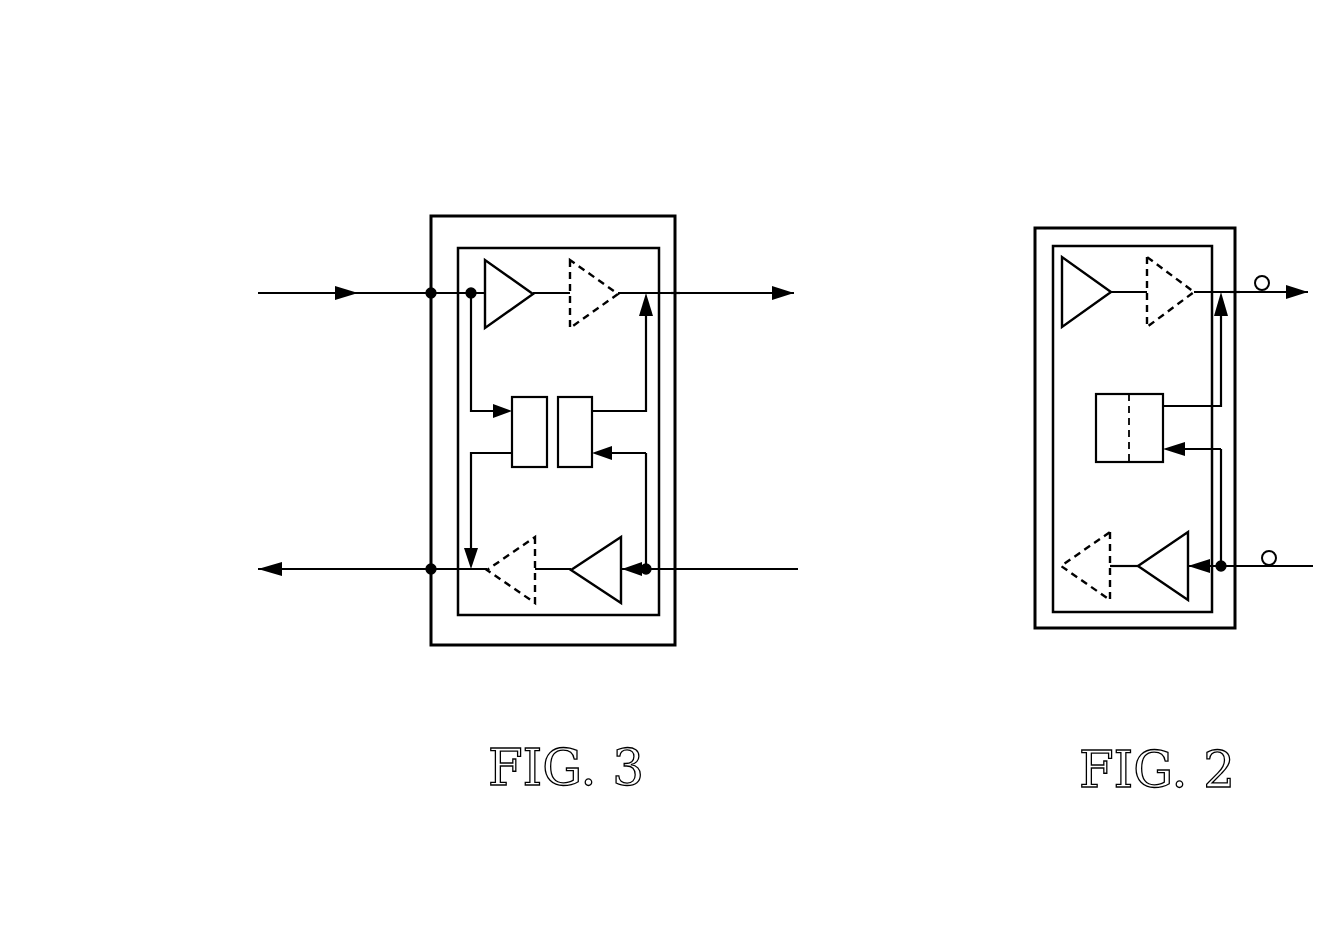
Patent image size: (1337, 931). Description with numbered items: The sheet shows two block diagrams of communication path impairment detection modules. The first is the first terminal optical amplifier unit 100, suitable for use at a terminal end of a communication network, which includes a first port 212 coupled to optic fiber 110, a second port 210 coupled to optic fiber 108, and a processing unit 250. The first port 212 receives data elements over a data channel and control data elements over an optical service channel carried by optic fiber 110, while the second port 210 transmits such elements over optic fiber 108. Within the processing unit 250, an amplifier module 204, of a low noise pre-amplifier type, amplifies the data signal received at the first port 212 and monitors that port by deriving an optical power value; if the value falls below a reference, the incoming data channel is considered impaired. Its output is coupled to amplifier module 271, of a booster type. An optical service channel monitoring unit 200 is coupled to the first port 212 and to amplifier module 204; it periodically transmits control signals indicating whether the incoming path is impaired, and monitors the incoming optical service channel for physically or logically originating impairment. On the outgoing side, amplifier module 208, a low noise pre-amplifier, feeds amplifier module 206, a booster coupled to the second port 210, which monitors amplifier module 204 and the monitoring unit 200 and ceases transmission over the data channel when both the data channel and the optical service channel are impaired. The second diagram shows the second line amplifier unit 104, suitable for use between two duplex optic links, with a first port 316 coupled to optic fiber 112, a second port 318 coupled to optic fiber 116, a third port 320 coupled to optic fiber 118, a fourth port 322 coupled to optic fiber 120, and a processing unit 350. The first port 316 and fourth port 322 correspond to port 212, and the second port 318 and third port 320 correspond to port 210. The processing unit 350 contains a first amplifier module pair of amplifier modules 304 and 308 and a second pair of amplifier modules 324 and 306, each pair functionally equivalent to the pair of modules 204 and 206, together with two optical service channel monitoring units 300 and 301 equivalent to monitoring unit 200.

In FIG. 3, the second line amplifier unit 104 is at (630, 216).
In FIG. 3, the processing unit 350 is at (458, 432).
In FIG. 3, the optic fiber 112 is at (343, 297).
In FIG. 3, the optic fiber 118 is at (723, 292).
In FIG. 3, the first port 316 is at (428, 300).
In FIG. 3, the third port 320 is at (675, 294).
In FIG. 3, the amplifier module 304 is at (485, 272).
In FIG. 3, the amplifier module 306 is at (610, 283).
In FIG. 3, the optical service channel monitoring unit 300 is at (522, 397).
In FIG. 3, the optical service channel monitoring unit 301 is at (576, 397).
In FIG. 3, the optic fiber 116 is at (345, 573).
In FIG. 3, the second port 318 is at (431, 565).
In FIG. 3, the amplifier module 308 is at (505, 588).
In FIG. 3, the amplifier module 324 is at (613, 603).
In FIG. 3, the fourth port 322 is at (680, 568).
In FIG. 3, the optic fiber 120 is at (778, 569).
In FIG. 2, the first terminal optical amplifier unit 100 is at (1205, 228).
In FIG. 2, the processing unit 250 is at (1053, 428).
In FIG. 2, the amplifier module 208 is at (1070, 262).
In FIG. 2, the amplifier module 206 is at (1160, 265).
In FIG. 2, the optic fiber 108 is at (1260, 276).
In FIG. 2, the second port 210 is at (1238, 293).
In FIG. 2, the optical service channel monitoring unit 200 is at (1118, 463).
In FIG. 2, the amplifier module 204 is at (1178, 600).
In FIG. 2, the amplifier module 271 is at (1100, 600).
In FIG. 2, the first port 212 is at (1236, 566).
In FIG. 2, the optic fiber 110 is at (1268, 572).